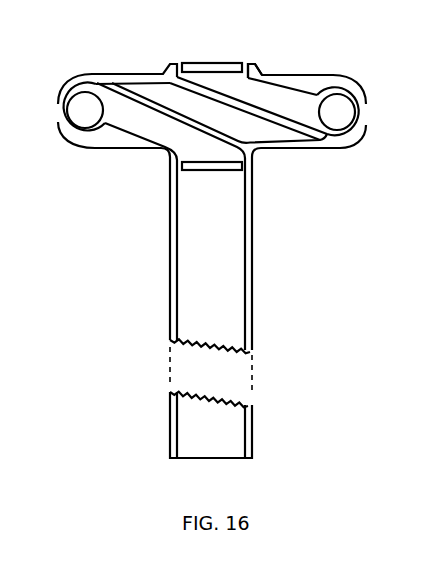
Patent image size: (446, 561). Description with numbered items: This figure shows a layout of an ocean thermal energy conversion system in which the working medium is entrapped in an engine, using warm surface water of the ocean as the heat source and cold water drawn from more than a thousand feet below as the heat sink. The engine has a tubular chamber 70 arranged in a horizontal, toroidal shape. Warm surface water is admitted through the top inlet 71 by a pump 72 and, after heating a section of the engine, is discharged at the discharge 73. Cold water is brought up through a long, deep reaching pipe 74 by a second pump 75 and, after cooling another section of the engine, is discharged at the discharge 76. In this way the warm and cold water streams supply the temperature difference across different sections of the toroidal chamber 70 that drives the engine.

The tubular chamber 70 is at (211, 111).
The top inlet 71 is at (248, 58).
The pump 72 is at (195, 66).
The discharge 73 is at (323, 212).
The deep reaching pipe 74 is at (211, 398).
The pump 75 is at (219, 171).
The discharge 76 is at (98, 207).